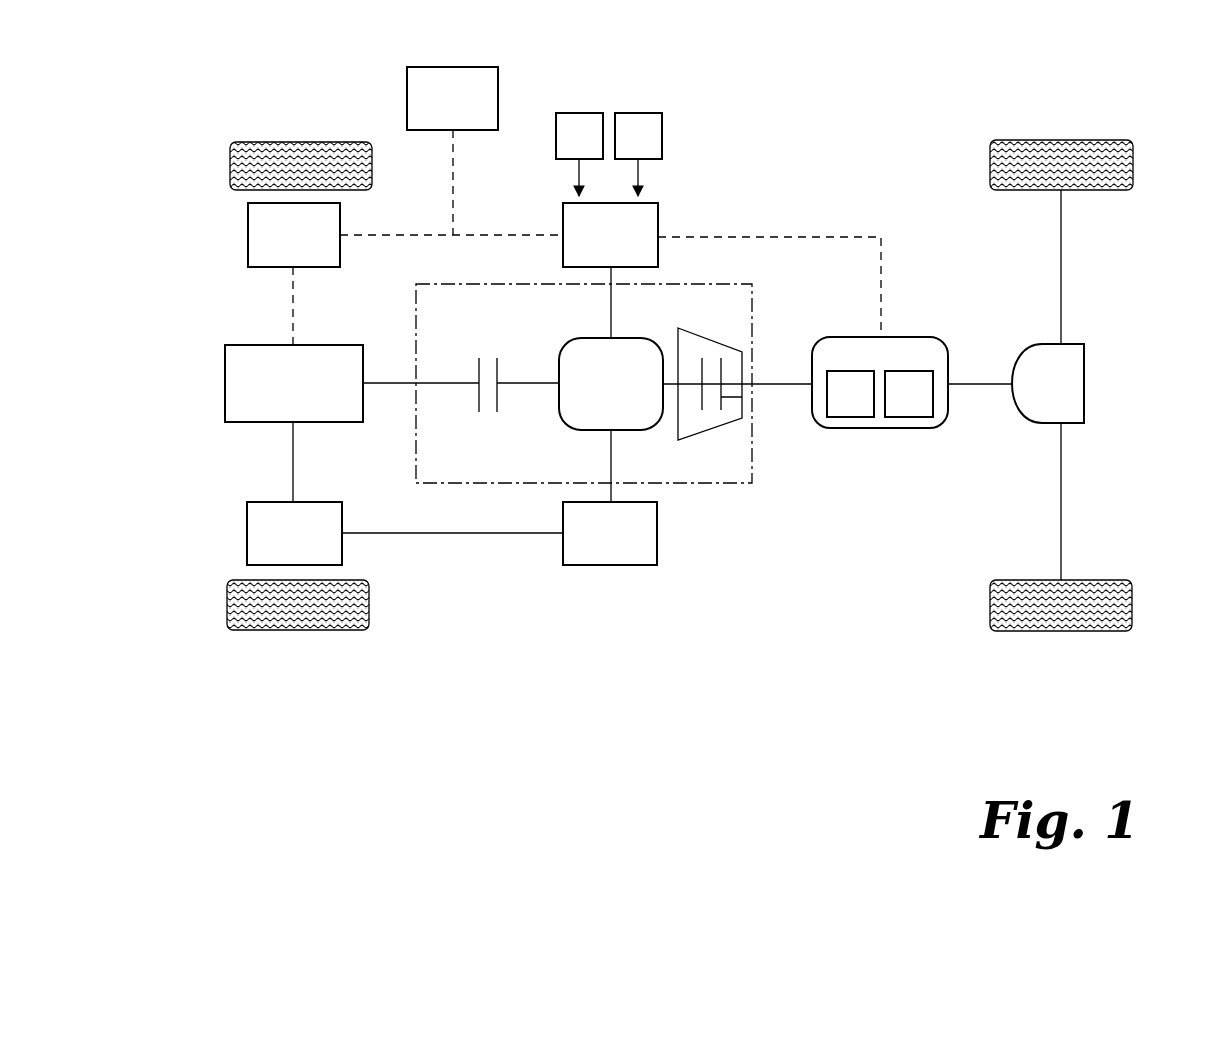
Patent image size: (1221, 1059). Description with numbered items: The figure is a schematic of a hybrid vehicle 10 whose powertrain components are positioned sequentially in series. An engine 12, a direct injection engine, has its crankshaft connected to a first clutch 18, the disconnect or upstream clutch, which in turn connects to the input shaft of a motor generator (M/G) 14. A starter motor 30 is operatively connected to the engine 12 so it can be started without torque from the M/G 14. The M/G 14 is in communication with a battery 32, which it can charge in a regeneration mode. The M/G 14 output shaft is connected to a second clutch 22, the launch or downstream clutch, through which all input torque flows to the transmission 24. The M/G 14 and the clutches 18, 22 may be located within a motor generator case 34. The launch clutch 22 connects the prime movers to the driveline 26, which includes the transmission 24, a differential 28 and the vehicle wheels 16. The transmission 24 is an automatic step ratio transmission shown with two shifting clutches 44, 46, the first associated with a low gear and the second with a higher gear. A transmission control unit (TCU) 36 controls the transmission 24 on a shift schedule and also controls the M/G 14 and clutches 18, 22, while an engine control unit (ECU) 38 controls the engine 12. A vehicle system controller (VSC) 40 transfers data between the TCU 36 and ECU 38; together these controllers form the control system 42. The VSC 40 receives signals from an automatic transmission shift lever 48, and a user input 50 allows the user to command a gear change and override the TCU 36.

The hybrid vehicle 10 is at (850, 78).
The engine 12 is at (225, 383).
The motor generator (M/G) 14 is at (627, 338).
The vehicle wheels 16 is at (1060, 140).
The first clutch (disconnect clutch) 18 is at (478, 403).
The second clutch (launch clutch) 22 is at (742, 397).
The transmission 24 is at (907, 338).
The driveline 26 is at (1110, 673).
The differential 28 is at (1084, 384).
The starter motor 30 is at (247, 533).
The battery 32 is at (610, 565).
The motor generator case 34 is at (708, 485).
The transmission control unit (TCU) 36 is at (658, 224).
The engine control unit (ECU) 38 is at (248, 233).
The vehicle system controller (VSC) 40 is at (452, 67).
The control system 42 is at (533, 62).
The shifting clutch 44 is at (863, 409).
The shifting clutch 46 is at (897, 409).
The automatic transmission shift lever 48 is at (592, 151).
The user input 50 is at (651, 151).